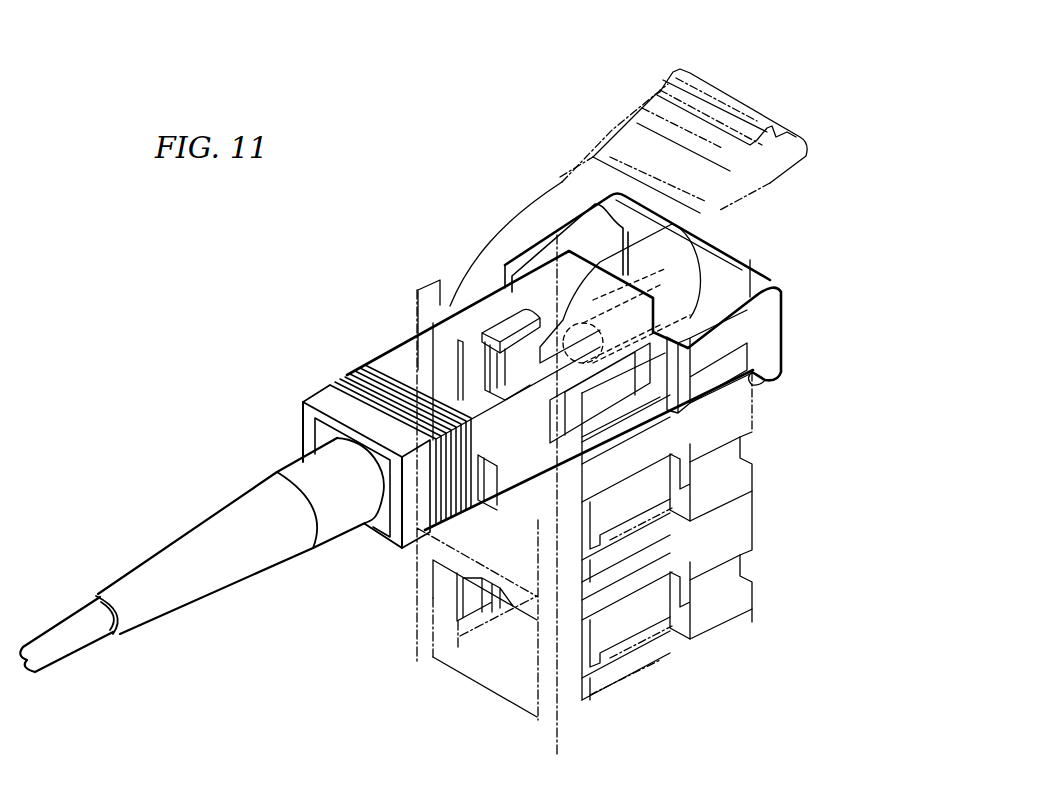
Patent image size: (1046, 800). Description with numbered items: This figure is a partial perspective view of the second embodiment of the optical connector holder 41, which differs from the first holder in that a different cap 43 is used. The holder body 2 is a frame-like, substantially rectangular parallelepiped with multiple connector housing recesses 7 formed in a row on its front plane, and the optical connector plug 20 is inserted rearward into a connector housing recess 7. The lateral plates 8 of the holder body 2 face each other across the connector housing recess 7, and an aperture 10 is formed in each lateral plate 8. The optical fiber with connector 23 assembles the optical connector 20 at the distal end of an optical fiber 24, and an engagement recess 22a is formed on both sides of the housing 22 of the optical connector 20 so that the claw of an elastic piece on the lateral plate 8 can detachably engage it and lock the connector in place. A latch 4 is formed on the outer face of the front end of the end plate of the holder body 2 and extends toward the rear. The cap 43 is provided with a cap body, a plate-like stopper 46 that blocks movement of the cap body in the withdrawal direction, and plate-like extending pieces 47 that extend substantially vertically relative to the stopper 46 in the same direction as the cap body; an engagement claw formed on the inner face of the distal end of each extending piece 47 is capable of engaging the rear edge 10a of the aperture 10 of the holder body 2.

The holder body 2 is at (721, 526).
The latch 4 is at (717, 88).
The connector housing recess 7 is at (440, 344).
The lateral plate 8 is at (745, 548).
The aperture 10 is at (655, 527).
The rear edge 10a is at (693, 508).
The optical connector plug 20 is at (510, 386).
The housing 22 is at (510, 386).
The engagement recess 22a is at (607, 400).
The optical fiber with connector 23 is at (178, 520).
The optical fiber 24 is at (72, 652).
The optical connector holder 41 is at (687, 310).
The cap 43 is at (783, 323).
The stopper 46 is at (740, 228).
The extending piece 47 is at (740, 400).